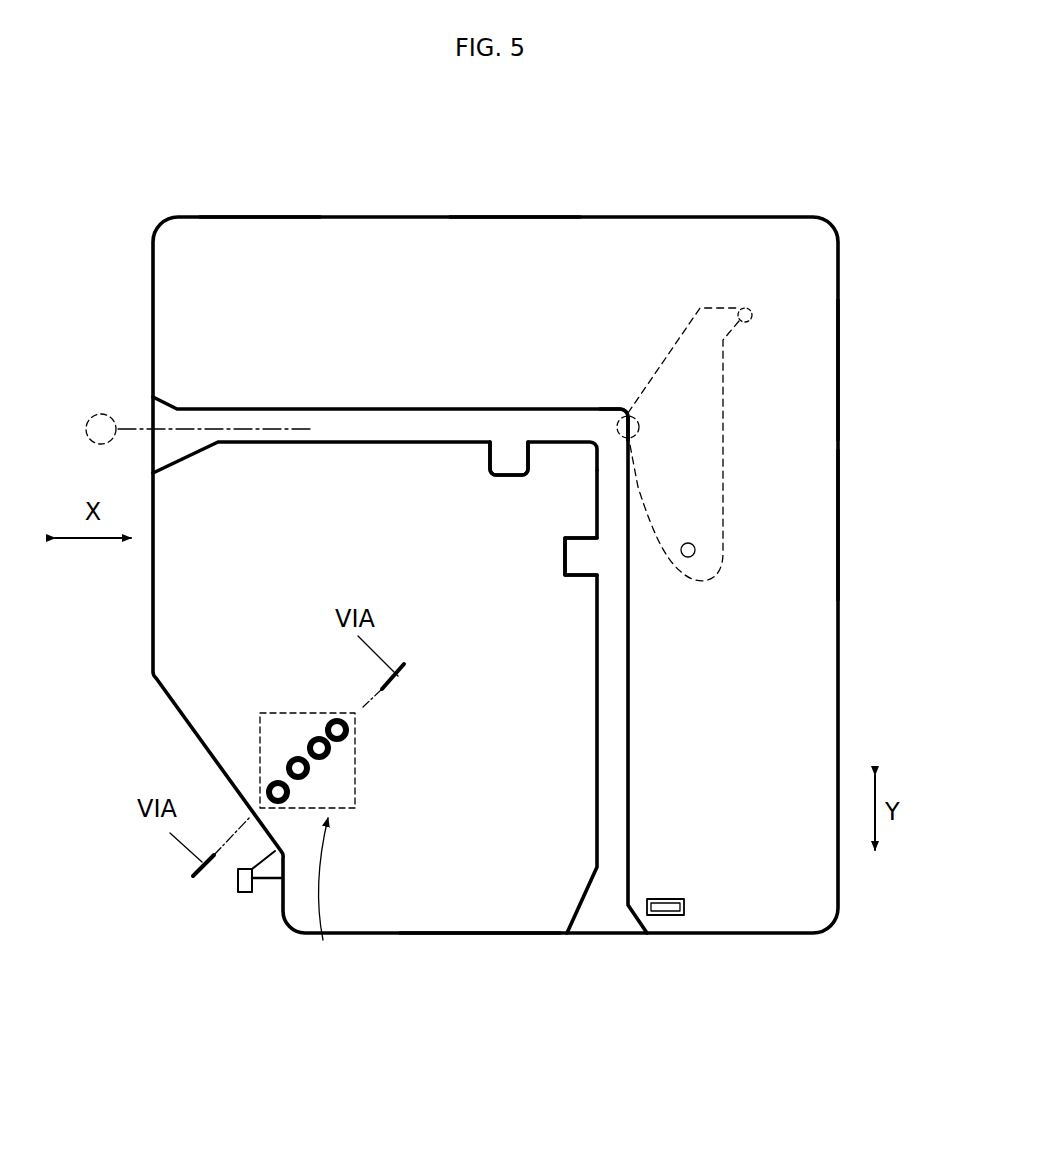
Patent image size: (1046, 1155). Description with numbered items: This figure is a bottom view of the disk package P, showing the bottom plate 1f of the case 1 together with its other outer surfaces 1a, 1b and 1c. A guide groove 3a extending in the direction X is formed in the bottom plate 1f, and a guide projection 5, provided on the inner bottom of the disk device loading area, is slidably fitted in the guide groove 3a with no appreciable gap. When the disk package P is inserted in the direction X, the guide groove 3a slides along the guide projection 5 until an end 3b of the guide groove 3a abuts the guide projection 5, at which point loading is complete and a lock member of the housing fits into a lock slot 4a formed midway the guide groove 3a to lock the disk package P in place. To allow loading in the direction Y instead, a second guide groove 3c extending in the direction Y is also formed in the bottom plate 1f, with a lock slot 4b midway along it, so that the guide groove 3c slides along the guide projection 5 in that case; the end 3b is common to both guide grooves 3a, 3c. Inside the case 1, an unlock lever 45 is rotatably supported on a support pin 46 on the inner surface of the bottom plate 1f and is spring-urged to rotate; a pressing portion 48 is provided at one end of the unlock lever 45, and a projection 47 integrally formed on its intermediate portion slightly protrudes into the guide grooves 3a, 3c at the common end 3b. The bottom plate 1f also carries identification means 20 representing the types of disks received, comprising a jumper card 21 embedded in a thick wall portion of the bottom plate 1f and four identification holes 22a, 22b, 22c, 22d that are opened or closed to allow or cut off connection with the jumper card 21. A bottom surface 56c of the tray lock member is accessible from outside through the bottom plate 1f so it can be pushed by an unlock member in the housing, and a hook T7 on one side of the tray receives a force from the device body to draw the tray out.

The case 1 is at (657, 209).
The side surface 1a is at (840, 522).
The side surface 1b is at (258, 216).
The bottom surface 1c is at (470, 936).
The bottom plate 1f is at (508, 238).
The guide groove 3a is at (375, 420).
The end 3b is at (610, 417).
The guide groove 3c is at (620, 760).
The lock slot 4a is at (490, 458).
The lock slot 4b is at (565, 560).
The guide projection 5 is at (100, 414).
The identification means 20 is at (332, 906).
The jumper card 21 is at (355, 790).
The identification hole 22a is at (349, 729).
The identification hole 22b is at (331, 752).
The identification hole 22c is at (293, 758).
The identification hole 22d is at (273, 782).
The unlock lever 45 is at (723, 508).
The support pin 46 is at (690, 557).
The projection 47 is at (620, 434).
The pressing portion 48 is at (745, 307).
The bottom surface 56c is at (666, 915).
The hook T7 is at (240, 892).
The disk package P is at (843, 408).